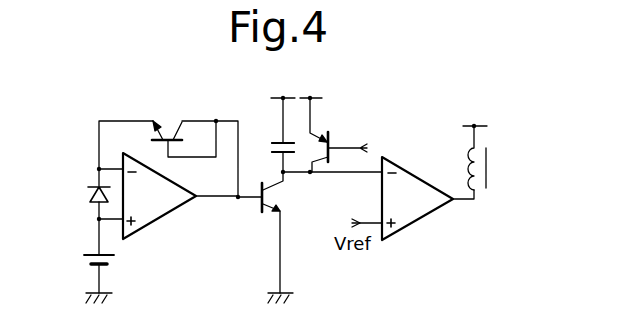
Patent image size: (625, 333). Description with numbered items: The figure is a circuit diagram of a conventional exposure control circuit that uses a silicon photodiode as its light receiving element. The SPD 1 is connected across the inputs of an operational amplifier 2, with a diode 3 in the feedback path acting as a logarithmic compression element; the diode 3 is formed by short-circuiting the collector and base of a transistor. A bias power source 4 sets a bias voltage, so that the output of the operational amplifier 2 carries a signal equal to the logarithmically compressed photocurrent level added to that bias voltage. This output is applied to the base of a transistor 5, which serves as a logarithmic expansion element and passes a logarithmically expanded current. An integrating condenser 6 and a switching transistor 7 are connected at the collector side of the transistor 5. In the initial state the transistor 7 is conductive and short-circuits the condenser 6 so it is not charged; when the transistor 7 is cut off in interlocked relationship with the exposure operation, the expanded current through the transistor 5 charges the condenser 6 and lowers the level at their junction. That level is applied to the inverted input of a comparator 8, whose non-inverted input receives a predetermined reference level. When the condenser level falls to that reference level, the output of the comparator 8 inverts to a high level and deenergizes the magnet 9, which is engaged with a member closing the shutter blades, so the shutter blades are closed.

The SPD 1 is at (86, 201).
The operational amplifier 2 is at (166, 218).
The diode 3 is at (177, 137).
The bias power source 4 is at (82, 256).
The transistor 5 is at (262, 214).
The integrating condenser 6 is at (281, 141).
The switching transistor 7 is at (318, 138).
The comparator 8 is at (425, 219).
The magnet 9 is at (478, 193).